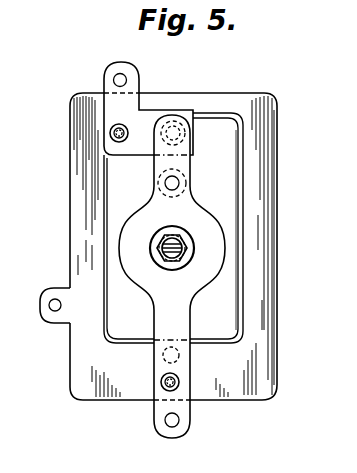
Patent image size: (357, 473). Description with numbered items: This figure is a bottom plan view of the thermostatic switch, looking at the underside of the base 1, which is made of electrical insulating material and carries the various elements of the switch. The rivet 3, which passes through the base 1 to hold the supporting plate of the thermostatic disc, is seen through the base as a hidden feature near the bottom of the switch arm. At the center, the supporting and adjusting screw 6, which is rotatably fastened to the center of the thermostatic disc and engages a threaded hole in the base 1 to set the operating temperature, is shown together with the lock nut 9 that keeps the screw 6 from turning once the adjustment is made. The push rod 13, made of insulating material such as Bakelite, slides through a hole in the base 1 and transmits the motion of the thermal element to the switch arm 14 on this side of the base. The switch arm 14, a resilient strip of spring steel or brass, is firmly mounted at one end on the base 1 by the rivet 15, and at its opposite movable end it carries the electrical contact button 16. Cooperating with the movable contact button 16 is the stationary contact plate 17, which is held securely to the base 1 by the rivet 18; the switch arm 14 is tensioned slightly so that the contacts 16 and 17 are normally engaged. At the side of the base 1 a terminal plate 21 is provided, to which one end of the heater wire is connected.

The base 1 is at (270, 205).
The rivet 3 is at (180, 352).
The supporting and adjusting screw 6 is at (168, 255).
The lock nut 9 is at (179, 241).
The push rod 13 is at (178, 182).
The switch arm 14 is at (203, 277).
The rivet 15 is at (161, 385).
The electrical contact button 16 is at (173, 127).
The stationary contact plate 17 is at (113, 100).
The rivet 18 is at (109, 133).
The terminal plate 21 is at (55, 290).